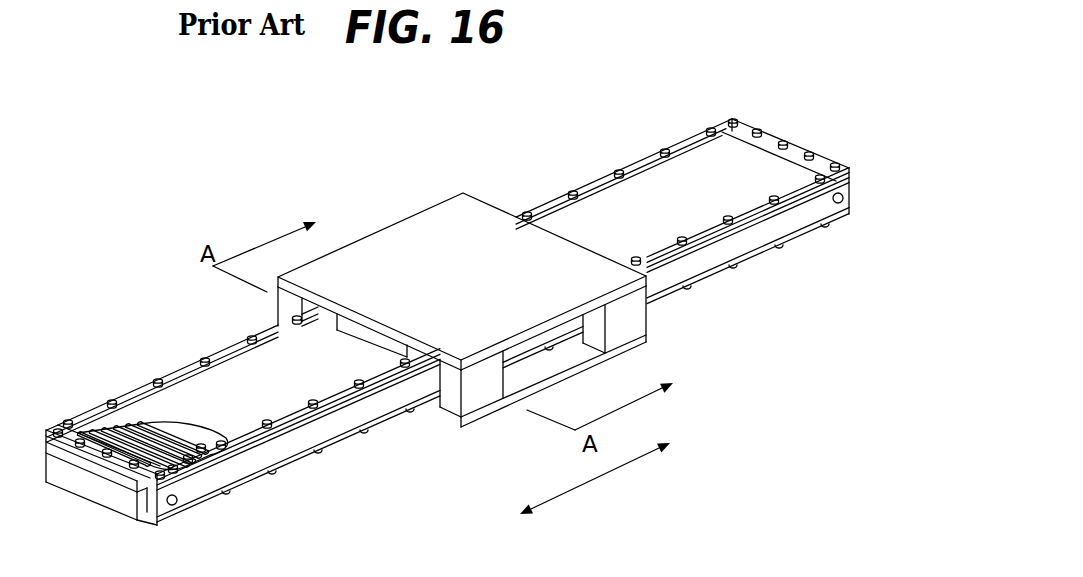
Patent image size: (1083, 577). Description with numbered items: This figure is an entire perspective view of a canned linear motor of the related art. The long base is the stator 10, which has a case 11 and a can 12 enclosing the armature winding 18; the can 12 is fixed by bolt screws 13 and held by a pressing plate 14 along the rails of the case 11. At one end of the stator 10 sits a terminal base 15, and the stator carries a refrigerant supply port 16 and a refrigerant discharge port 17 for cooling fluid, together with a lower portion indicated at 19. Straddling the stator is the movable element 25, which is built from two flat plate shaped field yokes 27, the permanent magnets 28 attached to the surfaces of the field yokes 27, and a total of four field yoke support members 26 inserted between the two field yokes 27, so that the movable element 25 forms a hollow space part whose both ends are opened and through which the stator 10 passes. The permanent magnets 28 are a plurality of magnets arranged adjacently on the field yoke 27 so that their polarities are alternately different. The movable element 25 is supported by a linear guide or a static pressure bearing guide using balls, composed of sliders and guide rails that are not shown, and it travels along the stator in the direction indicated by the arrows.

The stator 10 is at (162, 358).
The case 11 is at (372, 405).
The can 12 is at (310, 403).
The bolt screw 13 is at (567, 190).
The pressing plate 14 is at (630, 163).
The terminal base 15 is at (93, 487).
The refrigerant supply port 16 is at (178, 501).
The refrigerant discharge port 17 is at (838, 203).
The armature winding 18 is at (110, 432).
The base plate 19 is at (243, 437).
The movable element 25 is at (373, 222).
The field yoke support member 26 is at (630, 322).
The field yoke 27 is at (428, 233).
The permanent magnet 28 is at (372, 336).